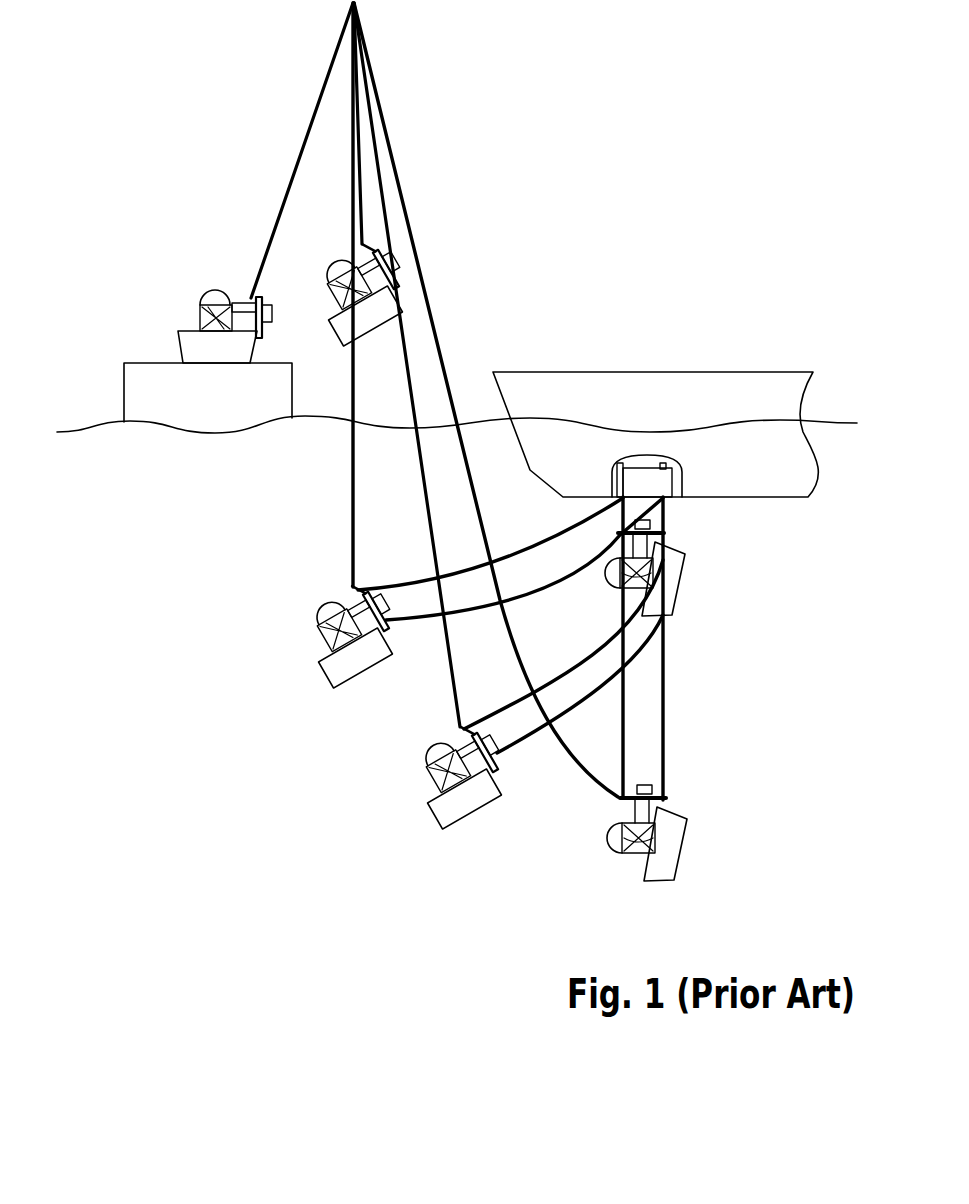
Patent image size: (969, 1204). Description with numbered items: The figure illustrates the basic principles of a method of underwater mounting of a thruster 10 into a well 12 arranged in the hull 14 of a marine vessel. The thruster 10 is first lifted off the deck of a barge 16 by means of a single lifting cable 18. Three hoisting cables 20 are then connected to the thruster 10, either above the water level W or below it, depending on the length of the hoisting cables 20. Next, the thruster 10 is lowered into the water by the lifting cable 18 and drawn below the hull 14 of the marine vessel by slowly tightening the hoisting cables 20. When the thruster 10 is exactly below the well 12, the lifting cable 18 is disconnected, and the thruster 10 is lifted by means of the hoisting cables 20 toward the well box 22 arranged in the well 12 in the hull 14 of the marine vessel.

The thruster 10 is at (228, 340).
The well 12 is at (653, 457).
The hull 14 is at (756, 452).
The barge 16 is at (222, 411).
The lifting cable 18 is at (307, 135).
The hoisting cables 20 is at (552, 677).
The well box 22 is at (657, 484).
The water level W is at (841, 422).